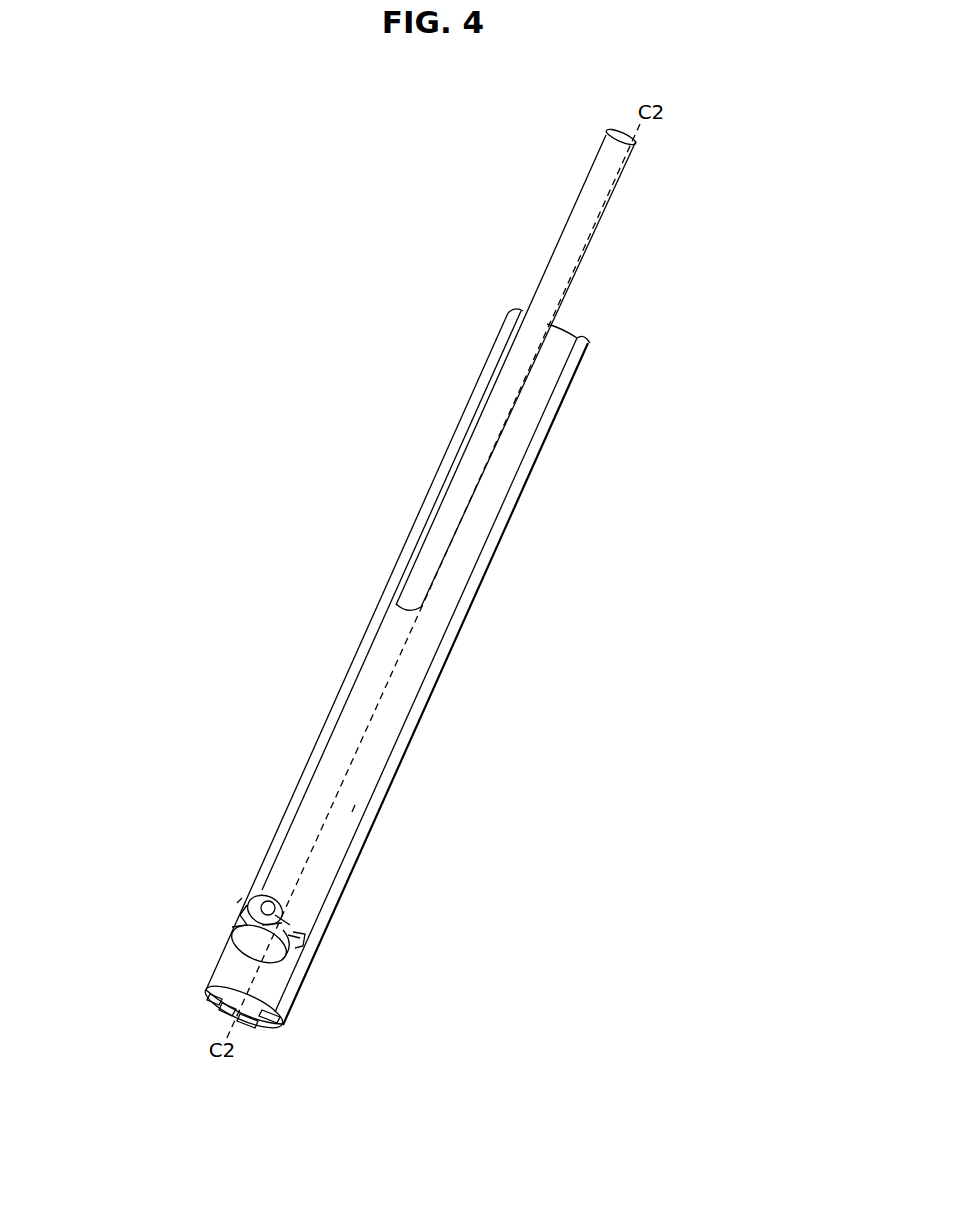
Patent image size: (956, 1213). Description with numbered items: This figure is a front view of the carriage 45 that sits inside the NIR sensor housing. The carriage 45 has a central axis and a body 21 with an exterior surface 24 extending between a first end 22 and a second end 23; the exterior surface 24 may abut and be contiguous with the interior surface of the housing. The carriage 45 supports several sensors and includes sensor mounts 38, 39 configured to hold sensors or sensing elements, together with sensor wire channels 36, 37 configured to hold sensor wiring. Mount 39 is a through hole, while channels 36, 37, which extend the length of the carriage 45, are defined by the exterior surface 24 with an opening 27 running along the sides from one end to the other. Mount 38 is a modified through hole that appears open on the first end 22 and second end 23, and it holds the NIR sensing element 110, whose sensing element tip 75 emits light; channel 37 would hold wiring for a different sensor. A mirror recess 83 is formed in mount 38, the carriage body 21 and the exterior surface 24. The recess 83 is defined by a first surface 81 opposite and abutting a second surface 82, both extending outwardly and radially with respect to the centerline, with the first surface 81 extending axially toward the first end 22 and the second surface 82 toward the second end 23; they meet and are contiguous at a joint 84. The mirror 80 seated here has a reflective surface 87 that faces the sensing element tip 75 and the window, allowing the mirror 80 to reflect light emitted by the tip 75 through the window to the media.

The body 21 is at (340, 710).
The first end 22 is at (515, 312).
The NIR sensing element 110 is at (470, 465).
The carriage 45 is at (488, 567).
The opening 27 is at (395, 765).
The exterior surface 24 is at (355, 805).
The sensing element tip 75 is at (255, 903).
The mirror 80 is at (235, 927).
The mirror recess 83 is at (220, 910).
The reflective surface 87 is at (242, 947).
The first surface 81 is at (272, 925).
The second surface 82 is at (292, 940).
The joint 84 is at (297, 937).
The sensor wire channel 36 is at (222, 1006).
The sensor wire channel 37 is at (280, 1015).
The sensor mount 38 is at (214, 998).
The sensor mount 39 is at (250, 1026).
The second end 23 is at (283, 1022).